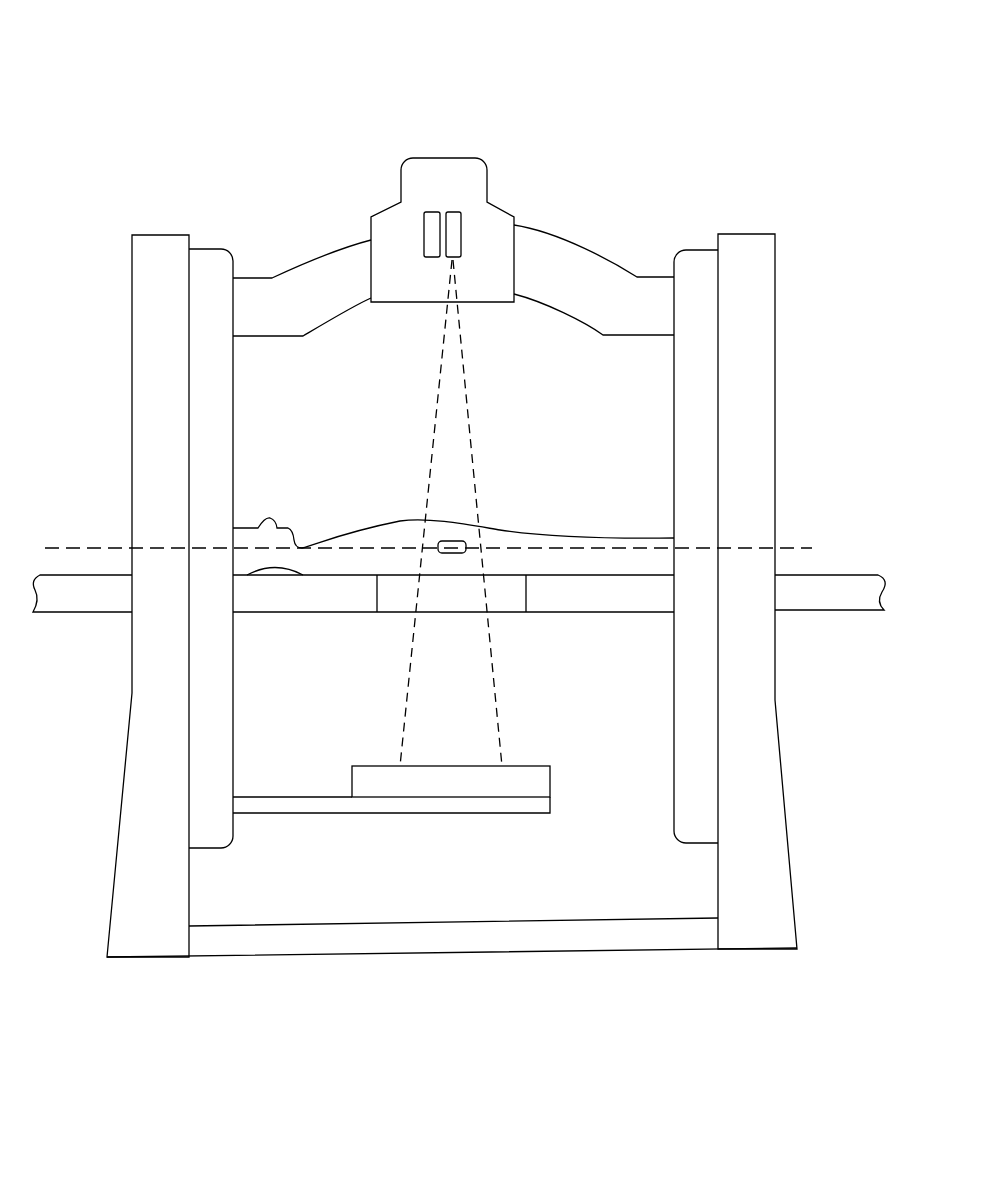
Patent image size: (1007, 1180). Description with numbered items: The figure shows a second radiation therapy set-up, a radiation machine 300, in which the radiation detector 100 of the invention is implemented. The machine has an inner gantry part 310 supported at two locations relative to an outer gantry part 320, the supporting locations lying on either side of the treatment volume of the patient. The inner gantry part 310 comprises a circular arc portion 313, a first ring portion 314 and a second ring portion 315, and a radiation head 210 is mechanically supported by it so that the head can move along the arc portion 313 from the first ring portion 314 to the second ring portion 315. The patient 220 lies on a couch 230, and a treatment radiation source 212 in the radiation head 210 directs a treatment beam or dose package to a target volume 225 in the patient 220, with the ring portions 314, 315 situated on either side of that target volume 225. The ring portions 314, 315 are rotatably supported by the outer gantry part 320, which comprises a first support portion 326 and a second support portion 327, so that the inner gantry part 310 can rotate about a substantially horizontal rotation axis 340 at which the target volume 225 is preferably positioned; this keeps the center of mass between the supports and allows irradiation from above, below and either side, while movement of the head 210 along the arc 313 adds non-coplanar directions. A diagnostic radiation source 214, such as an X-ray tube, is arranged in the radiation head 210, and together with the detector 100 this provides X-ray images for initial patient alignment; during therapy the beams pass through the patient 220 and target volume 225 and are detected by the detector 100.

The radiation machine 300 is at (247, 45).
The inner gantry part 310 is at (673, 176).
The outer gantry part 320 is at (774, 996).
The circular arc portion 313 is at (297, 283).
The first ring portion 314 is at (206, 268).
The second ring portion 315 is at (697, 262).
The first support portion 326 is at (157, 316).
The second support portion 327 is at (761, 328).
The radiation head 210 is at (433, 413).
The treatment radiation source 212 is at (430, 222).
The diagnostic radiation source 214 is at (455, 212).
The patient 220 is at (577, 545).
The target volume 225 is at (467, 545).
The couch 230 is at (825, 600).
The rotation axis 340 is at (812, 546).
The radiation detector 100 is at (548, 780).